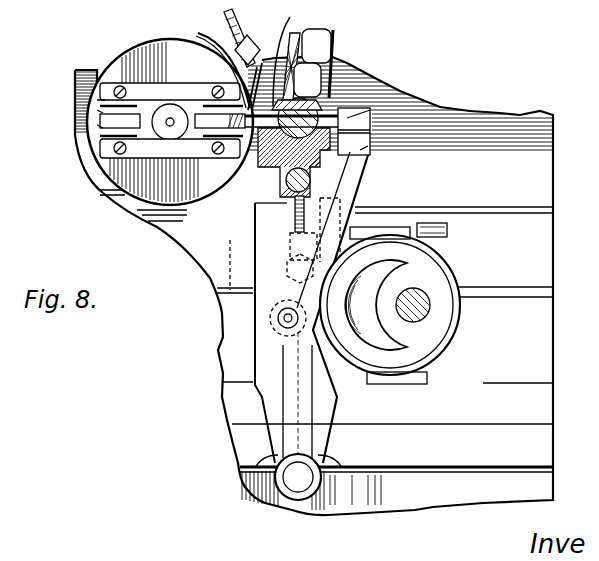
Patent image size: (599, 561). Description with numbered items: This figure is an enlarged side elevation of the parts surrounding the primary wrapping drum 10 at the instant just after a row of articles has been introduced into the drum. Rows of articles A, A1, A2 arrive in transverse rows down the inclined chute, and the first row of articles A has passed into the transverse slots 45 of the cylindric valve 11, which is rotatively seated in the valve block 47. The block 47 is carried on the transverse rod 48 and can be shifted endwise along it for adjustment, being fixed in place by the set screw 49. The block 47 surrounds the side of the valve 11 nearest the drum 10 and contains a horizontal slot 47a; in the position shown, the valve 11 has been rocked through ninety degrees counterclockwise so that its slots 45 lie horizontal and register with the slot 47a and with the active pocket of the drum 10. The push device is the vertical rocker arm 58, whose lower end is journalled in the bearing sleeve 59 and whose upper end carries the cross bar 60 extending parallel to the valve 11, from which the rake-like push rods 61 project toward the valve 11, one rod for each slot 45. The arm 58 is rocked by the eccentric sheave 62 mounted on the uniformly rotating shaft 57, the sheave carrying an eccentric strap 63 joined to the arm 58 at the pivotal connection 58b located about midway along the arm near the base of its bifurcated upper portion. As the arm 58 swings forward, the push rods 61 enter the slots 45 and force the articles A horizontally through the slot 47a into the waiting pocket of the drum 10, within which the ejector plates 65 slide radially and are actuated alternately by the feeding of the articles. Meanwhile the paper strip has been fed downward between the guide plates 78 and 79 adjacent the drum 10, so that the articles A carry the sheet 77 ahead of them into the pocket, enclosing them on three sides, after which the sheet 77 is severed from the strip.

The primary wrapping drum 10 is at (140, 41).
The guide plate 79 is at (207, 40).
The guide plate 78 is at (237, 30).
The sheet of wrapping material 77 is at (256, 66).
The horizontal slot 47a is at (295, 54).
The article row A2 is at (333, 45).
The article row A1 is at (350, 58).
The transverse slots 45 is at (342, 108).
The cross bar 60 is at (398, 98).
The cylindric valve 11 is at (368, 148).
The articles A is at (225, 86).
The ejector plates 65 is at (78, 113).
The push rods 61 is at (237, 151).
The transverse shaft or rod 48 is at (280, 187).
The valve block 47 is at (258, 201).
The set screw 49 is at (258, 219).
The rocker arm 58 is at (345, 180).
The eccentric strap 63 is at (395, 232).
The eccentric sheave 62 is at (430, 278).
The shaft 57 is at (428, 298).
The pivotal connection 58b is at (286, 318).
The bearing sleeve 59 is at (305, 503).